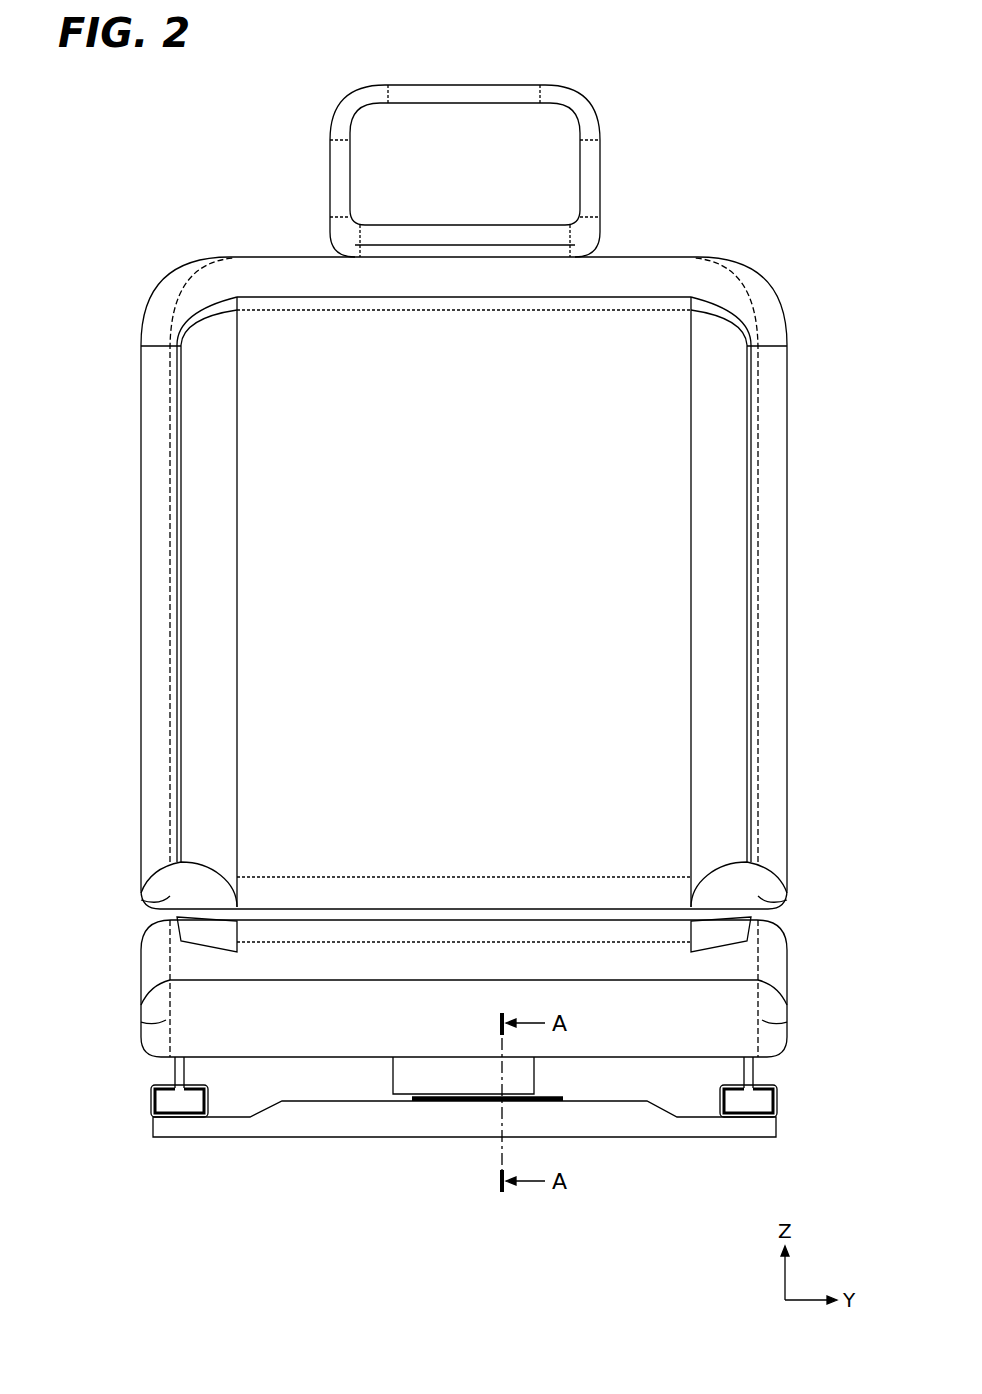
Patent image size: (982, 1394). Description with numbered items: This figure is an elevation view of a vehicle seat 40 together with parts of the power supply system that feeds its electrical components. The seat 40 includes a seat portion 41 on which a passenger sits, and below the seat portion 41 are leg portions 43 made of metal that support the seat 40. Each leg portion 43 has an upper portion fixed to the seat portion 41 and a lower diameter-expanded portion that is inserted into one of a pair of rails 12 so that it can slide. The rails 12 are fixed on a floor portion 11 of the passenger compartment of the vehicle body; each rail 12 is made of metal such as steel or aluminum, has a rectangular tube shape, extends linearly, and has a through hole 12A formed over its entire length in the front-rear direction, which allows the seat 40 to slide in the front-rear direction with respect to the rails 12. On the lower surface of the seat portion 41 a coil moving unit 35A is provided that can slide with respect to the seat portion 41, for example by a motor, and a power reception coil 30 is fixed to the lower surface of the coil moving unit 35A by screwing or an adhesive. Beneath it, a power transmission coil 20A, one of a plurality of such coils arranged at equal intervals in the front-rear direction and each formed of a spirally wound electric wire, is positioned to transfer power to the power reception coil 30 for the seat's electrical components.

The seat 40 is at (730, 250).
The seat portion 41 is at (707, 1017).
The leg portion 43 is at (178, 1083).
The rail 12 is at (148, 1107).
The through hole 12A is at (165, 1097).
The floor portion 11 is at (425, 1122).
The coil moving unit 35A is at (428, 1083).
The power transmission coil 20A is at (462, 1101).
The power reception coil 30 is at (483, 1101).